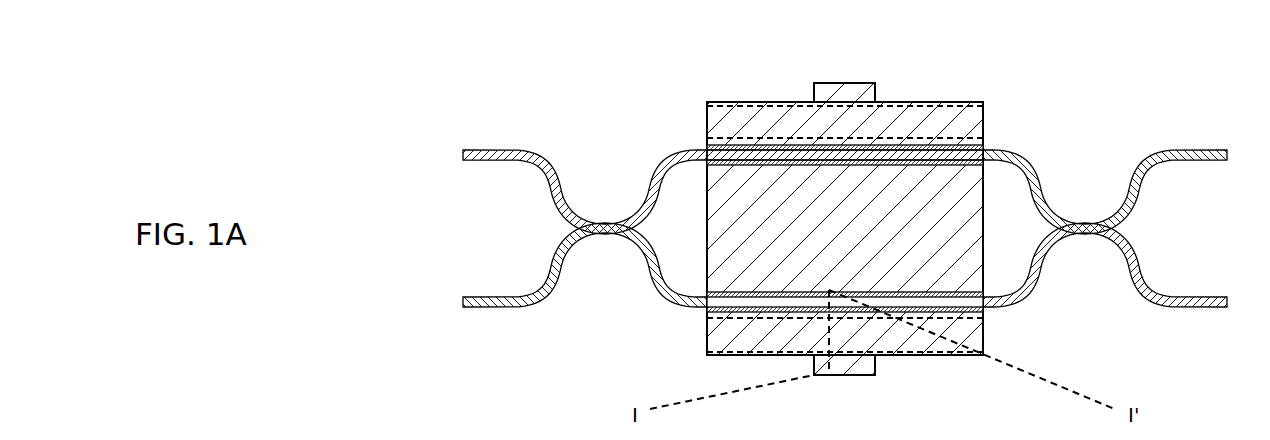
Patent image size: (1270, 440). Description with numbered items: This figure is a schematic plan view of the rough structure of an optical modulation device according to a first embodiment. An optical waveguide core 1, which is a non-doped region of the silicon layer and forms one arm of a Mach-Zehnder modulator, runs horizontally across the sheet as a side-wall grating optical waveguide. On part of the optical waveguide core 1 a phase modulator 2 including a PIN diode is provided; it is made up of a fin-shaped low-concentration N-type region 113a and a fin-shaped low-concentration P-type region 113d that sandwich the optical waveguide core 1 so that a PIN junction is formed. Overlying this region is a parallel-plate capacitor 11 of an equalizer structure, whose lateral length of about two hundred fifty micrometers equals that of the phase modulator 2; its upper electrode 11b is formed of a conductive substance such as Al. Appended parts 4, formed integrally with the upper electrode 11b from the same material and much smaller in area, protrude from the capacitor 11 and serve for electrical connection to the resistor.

The optical waveguide core 1 is at (1135, 180).
The phase modulator 2 is at (992, 152).
The appended part 4 is at (847, 93).
The capacitor 11 is at (752, 100).
The upper electrode 11b is at (727, 363).
The low-concentration N-type region 113a is at (985, 147).
The low-concentration P-type region 113d is at (990, 158).